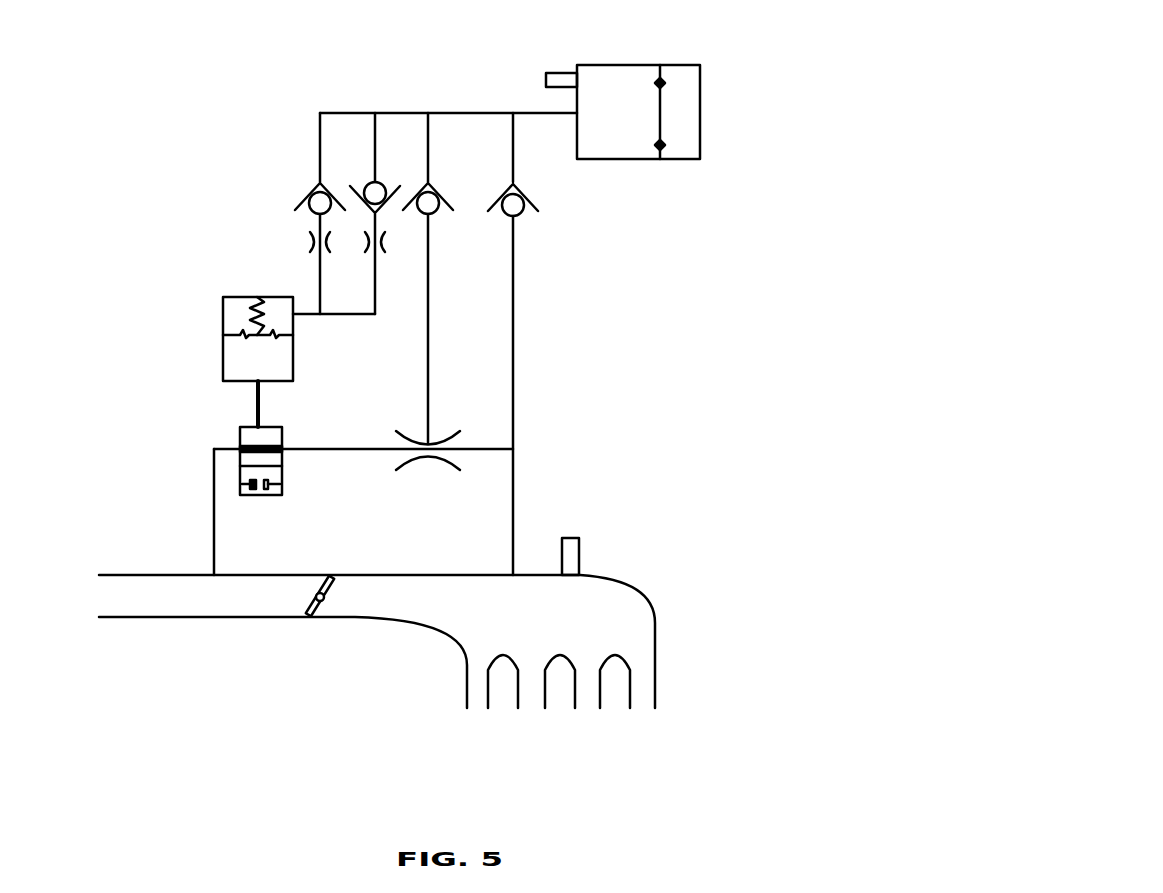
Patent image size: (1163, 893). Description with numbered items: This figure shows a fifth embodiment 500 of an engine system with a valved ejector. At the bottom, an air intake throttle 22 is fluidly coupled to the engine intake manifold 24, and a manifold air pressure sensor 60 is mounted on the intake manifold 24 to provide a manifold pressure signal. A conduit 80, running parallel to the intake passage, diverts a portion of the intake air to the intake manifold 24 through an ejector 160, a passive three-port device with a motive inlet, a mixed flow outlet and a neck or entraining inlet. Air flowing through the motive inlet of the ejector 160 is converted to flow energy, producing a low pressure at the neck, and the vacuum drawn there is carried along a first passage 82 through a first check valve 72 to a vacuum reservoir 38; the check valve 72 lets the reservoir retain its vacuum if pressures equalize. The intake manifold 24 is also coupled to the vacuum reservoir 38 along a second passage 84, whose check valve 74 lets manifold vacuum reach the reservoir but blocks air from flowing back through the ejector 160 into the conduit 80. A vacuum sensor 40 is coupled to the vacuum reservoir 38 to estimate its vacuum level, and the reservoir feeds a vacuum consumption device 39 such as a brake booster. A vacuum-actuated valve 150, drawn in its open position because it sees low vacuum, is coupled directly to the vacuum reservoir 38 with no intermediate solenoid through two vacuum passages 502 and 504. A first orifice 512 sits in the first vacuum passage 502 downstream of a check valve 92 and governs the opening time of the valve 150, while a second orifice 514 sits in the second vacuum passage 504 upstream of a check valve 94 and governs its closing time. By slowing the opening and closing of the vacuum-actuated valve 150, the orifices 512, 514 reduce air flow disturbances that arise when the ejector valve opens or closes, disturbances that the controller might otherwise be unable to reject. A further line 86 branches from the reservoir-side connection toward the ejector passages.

The fifth embodiment 500 is at (1073, 82).
The first vacuum passage 502 is at (320, 132).
The second vacuum passage 504 is at (375, 145).
The vacuum passage 86 is at (428, 113).
The first passage 82 is at (429, 345).
The second passage 84 is at (514, 345).
The check valve 92 is at (312, 188).
The check valve 94 is at (380, 184).
The first check valve 72 is at (434, 190).
The check valve 74 is at (525, 212).
The first orifice 512 is at (325, 255).
The second orifice 514 is at (379, 255).
The vacuum reservoir 38 is at (638, 112).
The vacuum consumption device 39 is at (680, 111).
The vacuum sensor 40 is at (556, 72).
The vacuum-actuated valve 150 is at (213, 316).
The conduit 80 is at (214, 500).
The ejector 160 is at (424, 466).
The manifold air pressure sensor 60 is at (572, 537).
The intake manifold 24 is at (628, 600).
The air intake throttle 22 is at (312, 618).